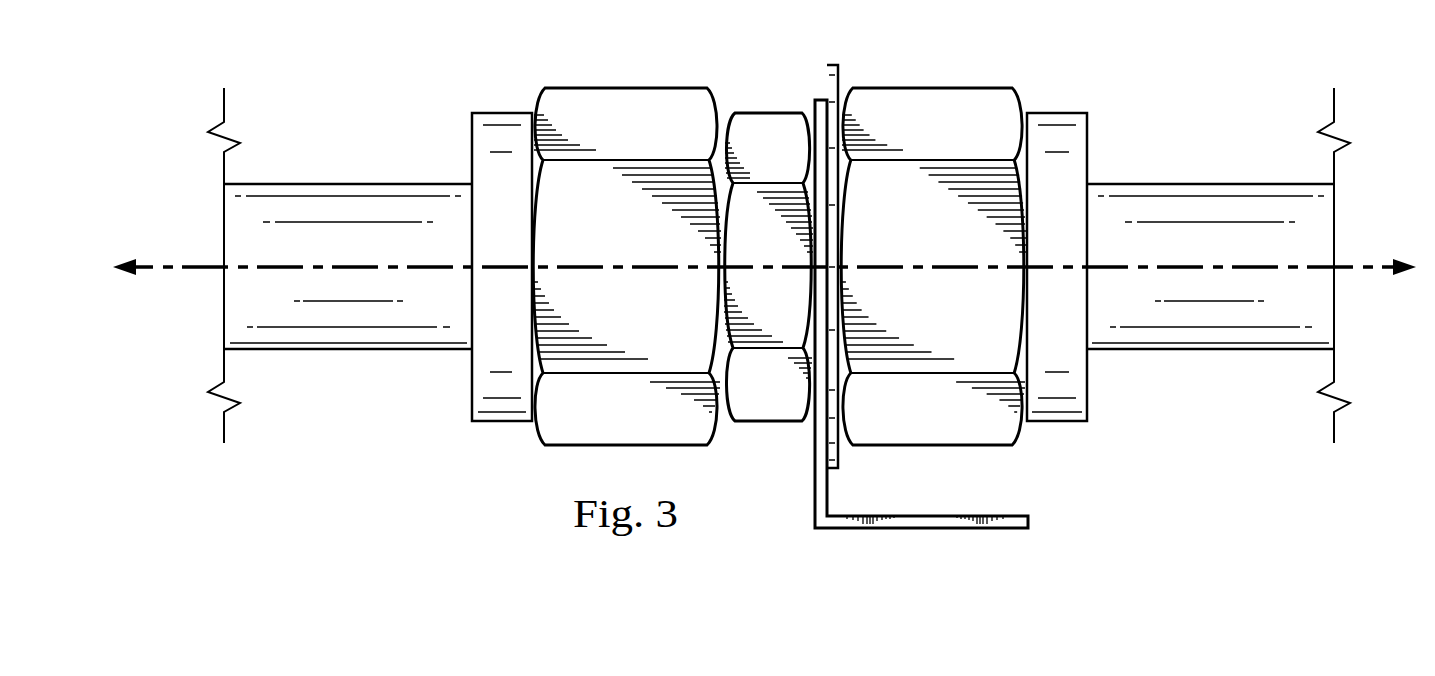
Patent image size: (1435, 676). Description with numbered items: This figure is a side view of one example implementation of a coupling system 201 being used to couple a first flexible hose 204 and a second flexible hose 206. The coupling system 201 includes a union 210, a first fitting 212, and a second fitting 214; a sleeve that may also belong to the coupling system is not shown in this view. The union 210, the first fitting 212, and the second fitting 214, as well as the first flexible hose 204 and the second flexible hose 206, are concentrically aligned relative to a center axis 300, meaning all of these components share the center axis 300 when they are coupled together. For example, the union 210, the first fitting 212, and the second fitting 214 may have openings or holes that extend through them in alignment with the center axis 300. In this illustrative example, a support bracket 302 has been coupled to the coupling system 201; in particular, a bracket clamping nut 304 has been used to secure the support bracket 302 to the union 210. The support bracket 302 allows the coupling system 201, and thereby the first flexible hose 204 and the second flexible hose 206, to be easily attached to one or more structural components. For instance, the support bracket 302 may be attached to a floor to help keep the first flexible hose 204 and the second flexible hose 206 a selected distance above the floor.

The coupling system 201 is at (1119, 57).
The first flexible hose 204 is at (294, 180).
The second flexible hose 206 is at (1241, 180).
The union 210 is at (767, 109).
The first fitting 212 is at (624, 84).
The second fitting 214 is at (935, 84).
The center axis 300 is at (172, 265).
The support bracket 302 is at (924, 534).
The bracket clamping nut 304 is at (847, 457).